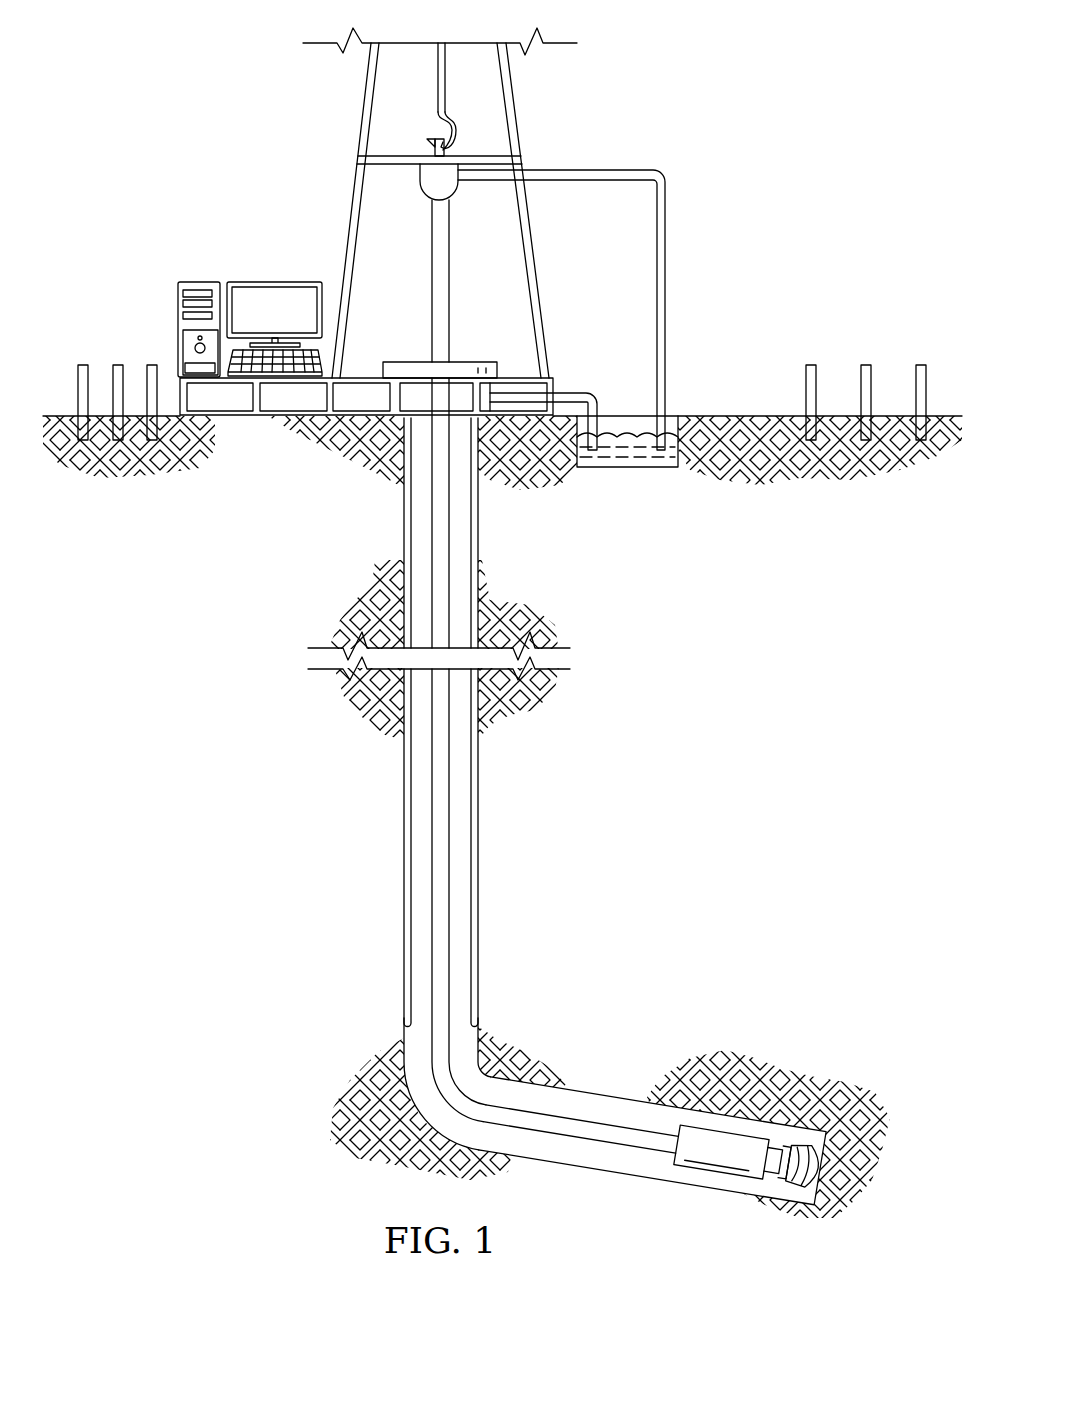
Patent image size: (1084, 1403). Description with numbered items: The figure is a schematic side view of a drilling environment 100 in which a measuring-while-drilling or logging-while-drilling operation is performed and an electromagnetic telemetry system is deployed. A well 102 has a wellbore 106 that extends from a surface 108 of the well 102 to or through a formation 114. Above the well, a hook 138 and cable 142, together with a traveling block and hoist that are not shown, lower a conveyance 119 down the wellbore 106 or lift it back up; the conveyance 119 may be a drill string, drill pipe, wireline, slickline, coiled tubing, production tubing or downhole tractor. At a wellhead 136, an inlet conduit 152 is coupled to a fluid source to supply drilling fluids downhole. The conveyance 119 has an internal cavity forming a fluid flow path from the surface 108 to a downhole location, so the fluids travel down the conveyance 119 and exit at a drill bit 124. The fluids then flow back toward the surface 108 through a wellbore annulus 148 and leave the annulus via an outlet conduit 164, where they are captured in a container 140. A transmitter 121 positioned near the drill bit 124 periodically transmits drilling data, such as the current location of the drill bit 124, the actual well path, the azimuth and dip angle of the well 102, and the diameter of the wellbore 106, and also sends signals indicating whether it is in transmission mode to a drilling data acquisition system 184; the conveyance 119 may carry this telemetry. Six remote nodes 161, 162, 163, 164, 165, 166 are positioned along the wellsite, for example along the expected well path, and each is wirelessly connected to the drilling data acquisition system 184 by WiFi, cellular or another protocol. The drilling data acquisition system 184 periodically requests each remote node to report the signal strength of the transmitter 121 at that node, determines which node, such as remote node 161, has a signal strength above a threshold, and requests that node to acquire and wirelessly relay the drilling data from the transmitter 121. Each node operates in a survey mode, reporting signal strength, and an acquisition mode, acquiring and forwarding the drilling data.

The drilling environment 100 is at (183, 138).
The well 102 is at (466, 353).
The wellbore 106 is at (479, 557).
The surface 108 is at (733, 415).
The formation 114 is at (630, 1051).
The conveyance 119 is at (438, 908).
The transmitter 121 is at (717, 1170).
The drill bit 124 is at (800, 1193).
The wellhead 136 is at (403, 362).
The hook 138 is at (455, 138).
The container 140 is at (632, 467).
The cable 142 is at (436, 100).
The wellbore annulus 148 is at (413, 496).
The inlet conduit 152 is at (606, 170).
The remote node 161 is at (811, 365).
The remote node 162 is at (866, 365).
The remote node 163 is at (921, 365).
The outlet conduit 164 is at (573, 392).
The remote node 165 is at (118, 365).
The remote node 166 is at (82, 365).
The drilling data acquisition system 184 is at (198, 282).